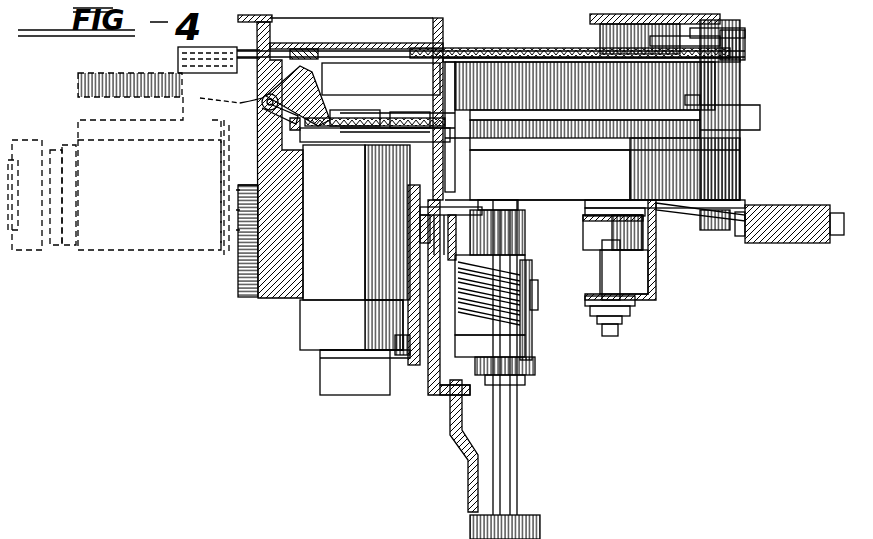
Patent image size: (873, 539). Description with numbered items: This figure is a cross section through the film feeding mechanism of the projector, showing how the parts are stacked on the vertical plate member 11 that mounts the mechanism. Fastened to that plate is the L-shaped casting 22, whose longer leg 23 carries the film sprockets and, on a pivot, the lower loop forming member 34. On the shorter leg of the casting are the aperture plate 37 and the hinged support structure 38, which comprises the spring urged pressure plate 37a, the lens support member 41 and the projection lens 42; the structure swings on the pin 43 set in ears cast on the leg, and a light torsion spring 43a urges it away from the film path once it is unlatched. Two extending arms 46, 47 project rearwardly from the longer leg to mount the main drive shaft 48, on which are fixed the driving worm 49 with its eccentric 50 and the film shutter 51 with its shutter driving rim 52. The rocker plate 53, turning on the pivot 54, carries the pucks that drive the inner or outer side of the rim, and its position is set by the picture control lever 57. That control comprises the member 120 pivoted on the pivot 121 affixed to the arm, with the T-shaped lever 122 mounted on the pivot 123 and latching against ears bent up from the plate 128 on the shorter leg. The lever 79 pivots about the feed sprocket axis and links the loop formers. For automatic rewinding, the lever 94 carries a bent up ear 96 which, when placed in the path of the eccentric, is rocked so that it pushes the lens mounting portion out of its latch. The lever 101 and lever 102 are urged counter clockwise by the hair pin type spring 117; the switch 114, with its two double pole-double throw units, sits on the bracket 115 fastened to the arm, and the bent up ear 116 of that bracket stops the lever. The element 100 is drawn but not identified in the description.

The vertical plate member 11 is at (466, 470).
The L-shaped casting 22 is at (436, 410).
The longer leg 23 is at (428, 398).
The lower loop forming member 34 is at (358, 398).
The aperture plate 37 is at (340, 112).
The spring urged pressure plate 37a is at (348, 142).
The hinged support structure 38 is at (75, 130).
The lens support member 41 is at (236, 92).
The projection lens 42 is at (300, 338).
The pin 43 is at (280, 90).
The light torsion spring 43a is at (300, 130).
The extending arm 46 is at (538, 368).
The extending arm 47 is at (605, 168).
The main drive shaft 48 is at (518, 430).
The driving worm 49 is at (538, 318).
The eccentric 50 is at (528, 232).
The film shutter 51 is at (500, 68).
The shutter driving rim 52 is at (322, 86).
The rocker plate 53 is at (620, 24).
The pivot 54 is at (655, 46).
The picture control lever 57 is at (170, 60).
The lever 79 is at (455, 262).
The lever 94 is at (460, 207).
The bent up ear 96 is at (436, 226).
The stud 100 is at (612, 330).
The lever 101 is at (596, 225).
The lever 102 is at (657, 275).
The switch 114 is at (780, 250).
The bracket 115 is at (690, 210).
The bent up ear 116 is at (658, 248).
The hair pin type spring 117 is at (586, 211).
The member 120 is at (548, 47).
The pivot 121 is at (742, 35).
The T-shaped lever 122 is at (252, 52).
The pivot 123 is at (295, 46).
The plate 128 is at (370, 46).